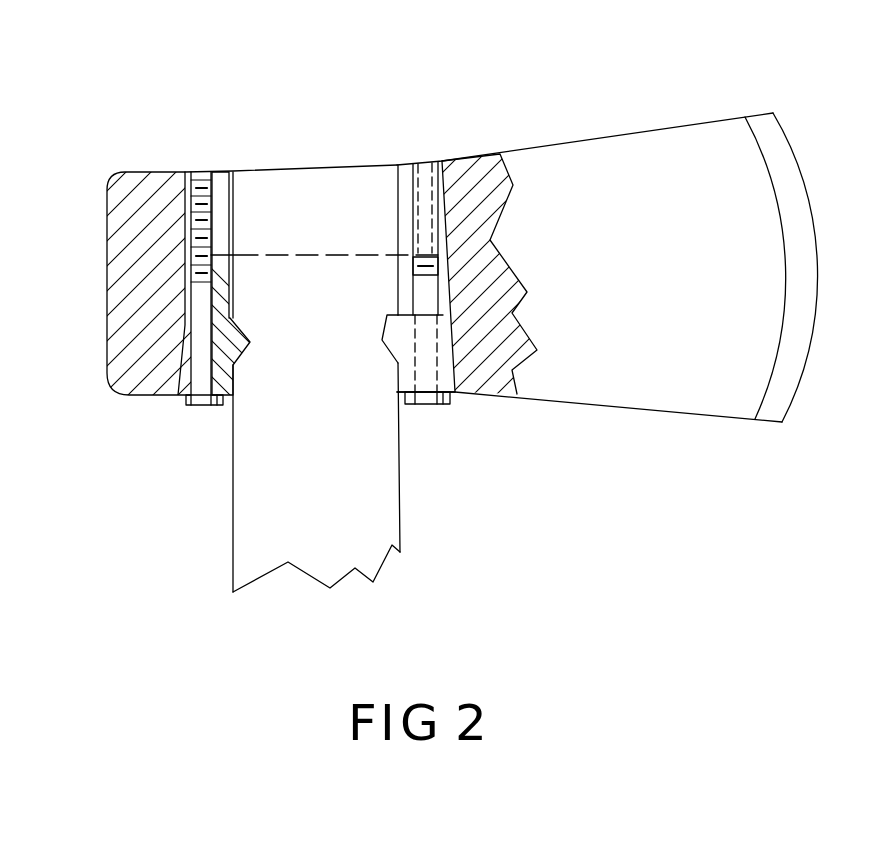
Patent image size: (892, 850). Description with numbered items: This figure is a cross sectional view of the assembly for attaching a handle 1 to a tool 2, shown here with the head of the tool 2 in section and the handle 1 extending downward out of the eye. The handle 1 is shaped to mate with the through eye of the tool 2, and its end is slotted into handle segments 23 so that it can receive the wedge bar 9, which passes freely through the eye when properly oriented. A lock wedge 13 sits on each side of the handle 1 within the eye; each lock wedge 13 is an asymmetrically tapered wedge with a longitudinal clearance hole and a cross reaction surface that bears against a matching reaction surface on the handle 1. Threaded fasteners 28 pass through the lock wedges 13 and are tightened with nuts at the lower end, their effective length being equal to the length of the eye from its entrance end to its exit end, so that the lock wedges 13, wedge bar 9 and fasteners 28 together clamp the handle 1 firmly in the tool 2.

The handle 1 is at (266, 400).
The tool 2 is at (506, 213).
The wedge bar 9 is at (348, 224).
The lock wedge 13 is at (285, 309).
The handle segments 23 is at (311, 153).
The threaded fasteners 28 is at (322, 464).